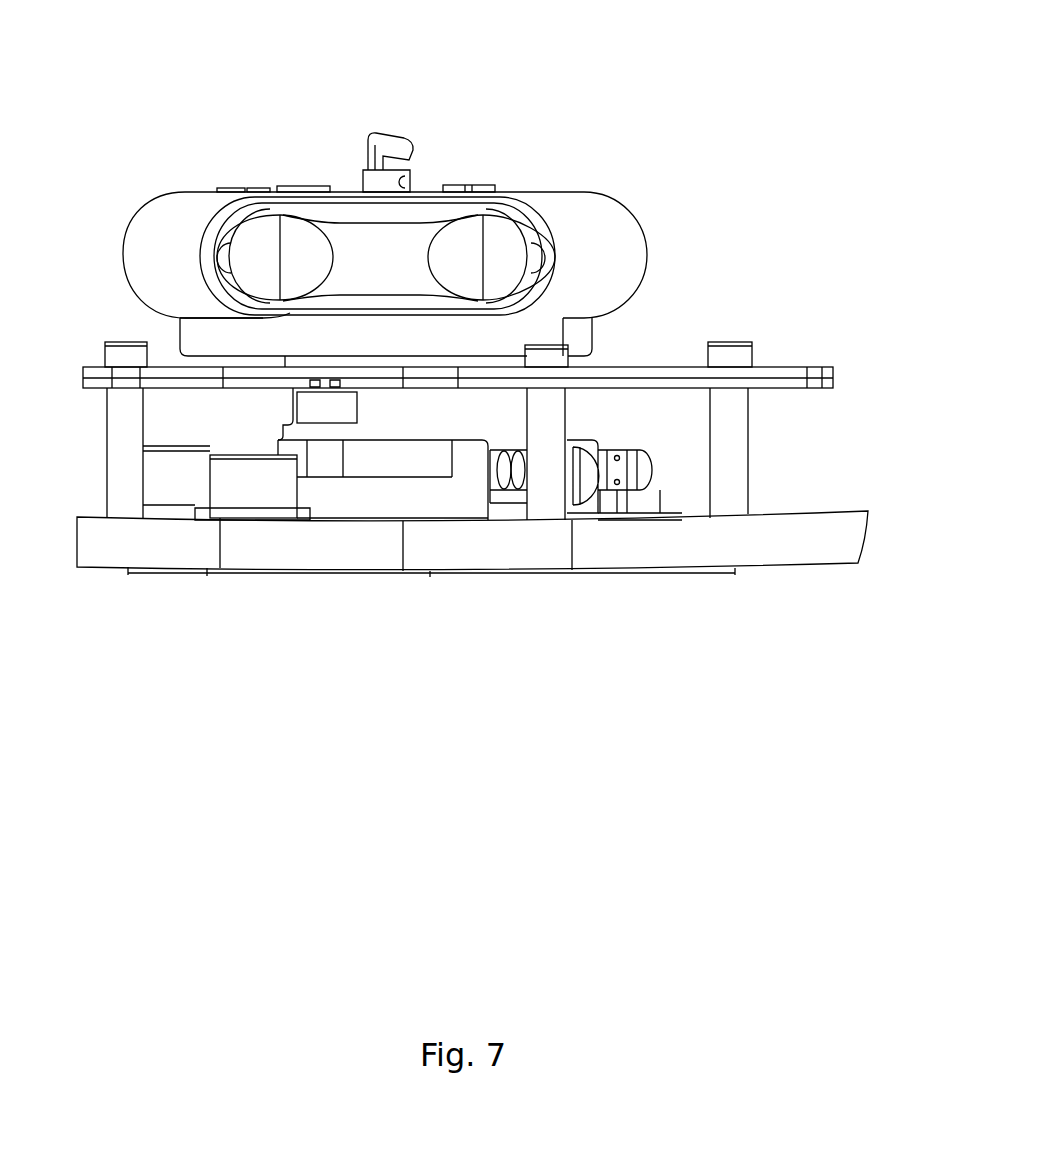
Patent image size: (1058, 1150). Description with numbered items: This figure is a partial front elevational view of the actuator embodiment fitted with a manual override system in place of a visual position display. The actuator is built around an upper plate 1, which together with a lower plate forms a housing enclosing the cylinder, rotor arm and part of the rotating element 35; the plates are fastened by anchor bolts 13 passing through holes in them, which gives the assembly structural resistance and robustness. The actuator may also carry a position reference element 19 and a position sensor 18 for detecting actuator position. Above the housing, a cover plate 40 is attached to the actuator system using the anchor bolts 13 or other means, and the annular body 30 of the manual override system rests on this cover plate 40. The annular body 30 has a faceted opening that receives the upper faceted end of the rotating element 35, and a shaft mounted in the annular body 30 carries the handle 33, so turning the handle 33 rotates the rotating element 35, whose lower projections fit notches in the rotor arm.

The upper plate 1 is at (797, 548).
The anchor bolts 13 is at (732, 438).
The position sensor 18 is at (640, 475).
The position reference element 19 is at (498, 478).
The annular body 30 is at (607, 222).
The handle 33 is at (413, 138).
The rotating element 35 is at (335, 498).
The cover plate 40 is at (622, 383).